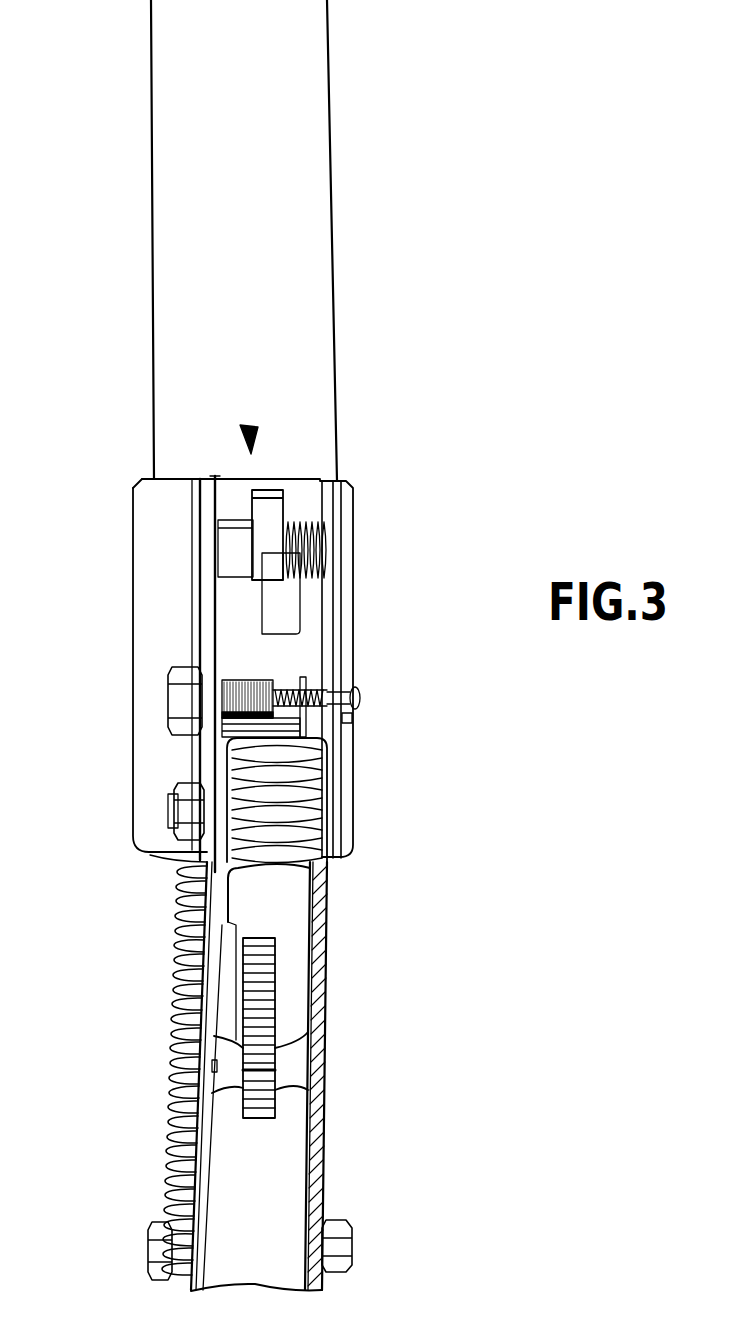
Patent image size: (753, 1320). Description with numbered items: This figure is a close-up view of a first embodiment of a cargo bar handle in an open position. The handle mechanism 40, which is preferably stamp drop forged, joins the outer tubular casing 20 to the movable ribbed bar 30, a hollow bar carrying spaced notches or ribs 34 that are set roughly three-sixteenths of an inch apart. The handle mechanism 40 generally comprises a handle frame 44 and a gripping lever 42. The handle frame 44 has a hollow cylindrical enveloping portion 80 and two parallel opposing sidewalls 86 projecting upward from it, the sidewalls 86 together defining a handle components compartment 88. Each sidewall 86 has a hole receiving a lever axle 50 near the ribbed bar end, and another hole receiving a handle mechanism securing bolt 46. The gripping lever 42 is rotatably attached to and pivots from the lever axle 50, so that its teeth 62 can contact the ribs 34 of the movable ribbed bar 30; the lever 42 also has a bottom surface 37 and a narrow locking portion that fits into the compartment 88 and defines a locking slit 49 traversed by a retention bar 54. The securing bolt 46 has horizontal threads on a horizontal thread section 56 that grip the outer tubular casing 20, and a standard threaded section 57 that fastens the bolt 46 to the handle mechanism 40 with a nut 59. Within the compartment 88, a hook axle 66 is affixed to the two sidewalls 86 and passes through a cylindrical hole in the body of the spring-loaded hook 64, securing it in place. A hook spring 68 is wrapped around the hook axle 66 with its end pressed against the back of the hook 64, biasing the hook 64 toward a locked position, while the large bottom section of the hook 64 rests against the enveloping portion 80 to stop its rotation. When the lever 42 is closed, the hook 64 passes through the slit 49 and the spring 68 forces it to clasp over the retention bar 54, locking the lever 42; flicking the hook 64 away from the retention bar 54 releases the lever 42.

The outer tubular casing 20 is at (318, 228).
The handle components compartment 88 is at (249, 435).
The handle mechanism 40 is at (133, 513).
The handle frame 44 is at (140, 558).
The hollow cylindrical enveloping portion 80 is at (355, 652).
The sidewalls 86 is at (217, 613).
The hook axle 66 is at (242, 535).
The hook 64 is at (267, 520).
The hook spring 68 is at (318, 548).
The horizontal thread section 56 is at (243, 698).
The standard threaded section 57 is at (345, 698).
The nut 59 is at (355, 718).
The handle mechanism securing bolt 46 is at (183, 708).
The lever axle 50 is at (167, 811).
The teeth 62 is at (355, 821).
The movable ribbed bar 30 is at (323, 1107).
The ribs 34 is at (176, 1081).
The bottom surface 37 is at (290, 1175).
The locking slit 49 is at (266, 1000).
The retention bar 54 is at (262, 1065).
The gripping lever 42 is at (297, 1217).